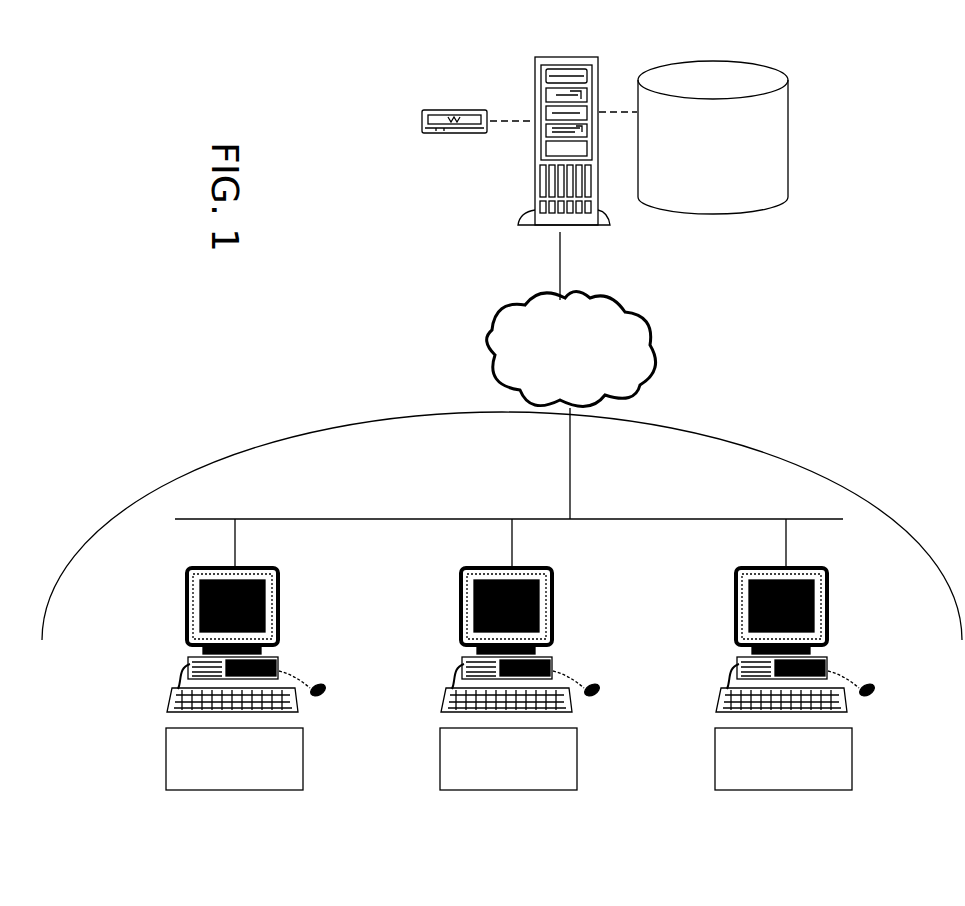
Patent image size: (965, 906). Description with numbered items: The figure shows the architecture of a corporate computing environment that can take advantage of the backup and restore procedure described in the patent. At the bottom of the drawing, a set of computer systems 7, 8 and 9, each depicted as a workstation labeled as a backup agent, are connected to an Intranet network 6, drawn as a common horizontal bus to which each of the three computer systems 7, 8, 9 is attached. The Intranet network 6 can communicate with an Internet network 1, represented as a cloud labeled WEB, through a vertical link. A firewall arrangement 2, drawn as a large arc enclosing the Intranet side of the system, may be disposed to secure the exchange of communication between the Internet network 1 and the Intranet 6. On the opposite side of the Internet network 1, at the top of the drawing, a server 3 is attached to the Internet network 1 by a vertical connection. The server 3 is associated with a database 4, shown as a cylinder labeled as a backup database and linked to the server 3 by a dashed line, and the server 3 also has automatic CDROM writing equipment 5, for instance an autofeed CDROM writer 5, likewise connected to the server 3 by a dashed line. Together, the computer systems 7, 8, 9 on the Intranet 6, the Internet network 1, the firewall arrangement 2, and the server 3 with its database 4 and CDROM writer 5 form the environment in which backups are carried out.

The Internet network 1 is at (633, 372).
The firewall arrangement 2 is at (830, 478).
The server 3 is at (606, 222).
The database 4 is at (790, 194).
The autofeed CDROM writer 5 is at (422, 120).
The Intranet network 6 is at (318, 519).
The computer system 7 is at (163, 711).
The computer system 8 is at (440, 713).
The computer system 9 is at (715, 712).